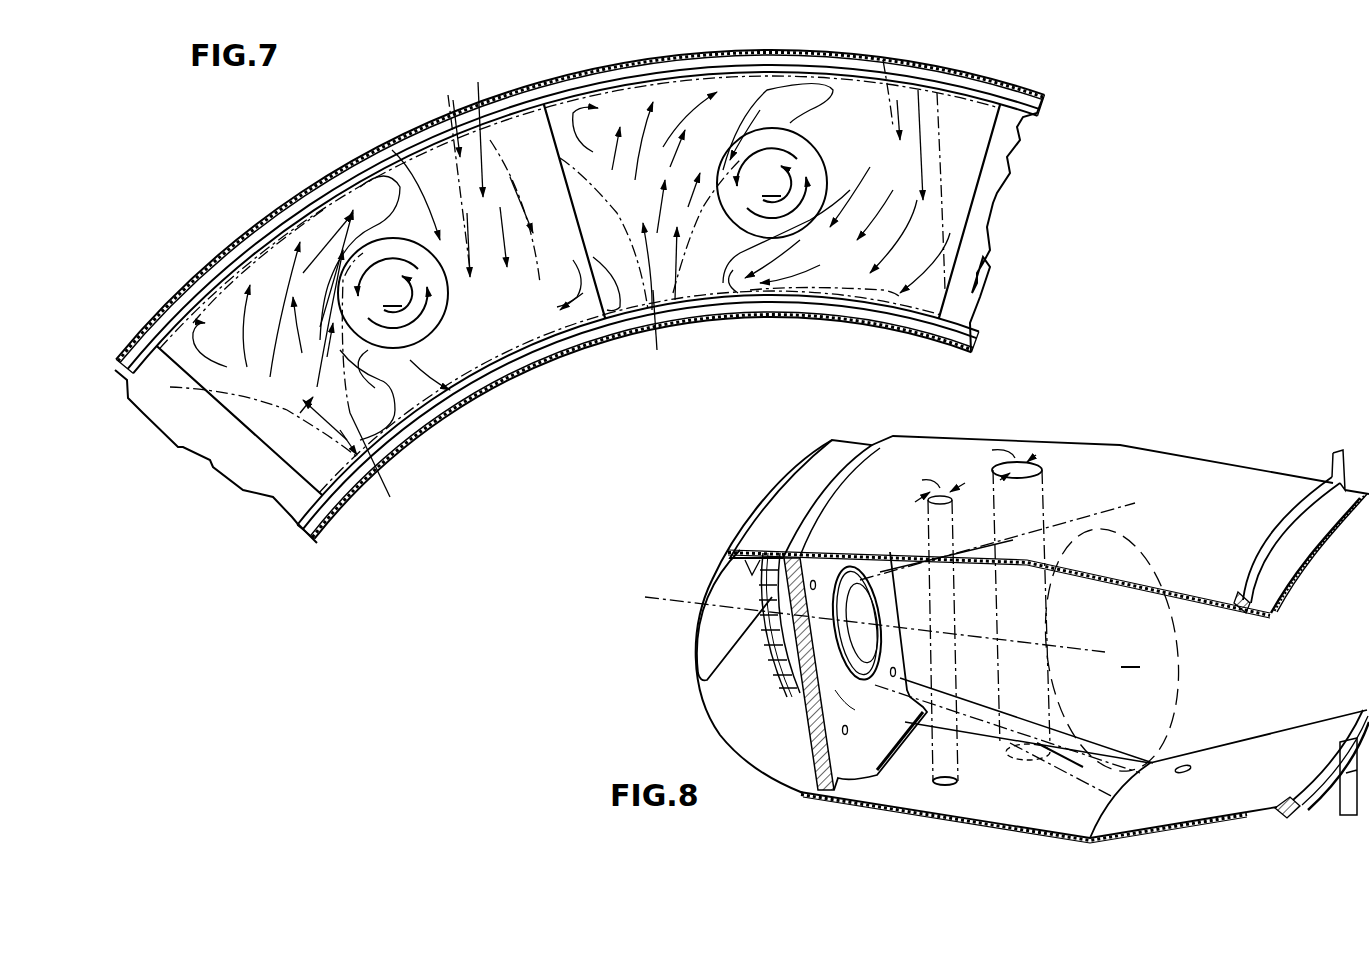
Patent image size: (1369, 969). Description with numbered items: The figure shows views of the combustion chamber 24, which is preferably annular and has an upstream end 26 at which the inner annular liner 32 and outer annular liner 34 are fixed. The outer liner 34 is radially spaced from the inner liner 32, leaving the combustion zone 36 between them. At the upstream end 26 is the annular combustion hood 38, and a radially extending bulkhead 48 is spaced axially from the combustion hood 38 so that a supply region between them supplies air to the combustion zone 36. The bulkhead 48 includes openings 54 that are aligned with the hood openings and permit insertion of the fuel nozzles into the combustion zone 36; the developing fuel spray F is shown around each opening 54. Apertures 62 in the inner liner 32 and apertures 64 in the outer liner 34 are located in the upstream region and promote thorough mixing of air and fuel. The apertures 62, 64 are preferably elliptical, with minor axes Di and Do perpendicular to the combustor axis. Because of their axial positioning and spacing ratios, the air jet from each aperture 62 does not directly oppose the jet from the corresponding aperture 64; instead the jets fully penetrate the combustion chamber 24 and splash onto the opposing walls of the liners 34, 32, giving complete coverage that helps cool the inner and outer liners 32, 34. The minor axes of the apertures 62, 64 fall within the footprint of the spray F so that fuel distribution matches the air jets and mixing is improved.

In FIG. 7, the combustion chamber 24 is at (207, 237).
In FIG. 8, the combustion chamber 24 is at (1130, 408).
In FIG. 8, the upstream end 26 is at (748, 768).
In FIG. 7, the inner annular liner 32 is at (498, 388).
In FIG. 8, the inner annular liner 32 is at (1028, 812).
In FIG. 7, the outer annular liner 34 is at (318, 184).
In FIG. 8, the outer annular liner 34 is at (1190, 490).
In FIG. 7, the combustion zone 36 is at (433, 223).
In FIG. 8, the annular combustion hood 38 is at (708, 598).
In FIG. 8, the bulkhead 48 is at (822, 738).
In FIG. 7, the openings 54 is at (735, 290).
In FIG. 7, the apertures 62 is at (385, 446).
In FIG. 8, the apertures 62 is at (936, 779).
In FIG. 7, the apertures 64 is at (462, 100).
In FIG. 8, the apertures 64 is at (1040, 468).